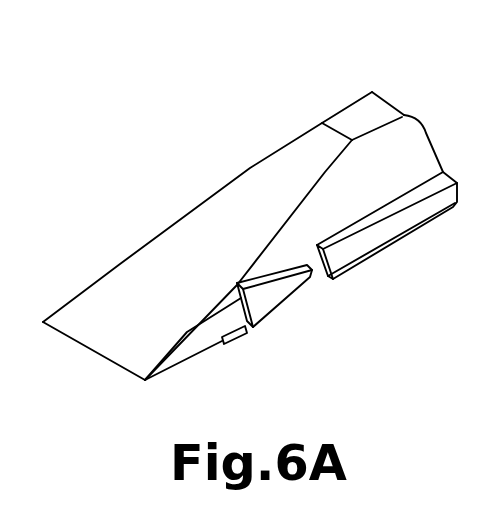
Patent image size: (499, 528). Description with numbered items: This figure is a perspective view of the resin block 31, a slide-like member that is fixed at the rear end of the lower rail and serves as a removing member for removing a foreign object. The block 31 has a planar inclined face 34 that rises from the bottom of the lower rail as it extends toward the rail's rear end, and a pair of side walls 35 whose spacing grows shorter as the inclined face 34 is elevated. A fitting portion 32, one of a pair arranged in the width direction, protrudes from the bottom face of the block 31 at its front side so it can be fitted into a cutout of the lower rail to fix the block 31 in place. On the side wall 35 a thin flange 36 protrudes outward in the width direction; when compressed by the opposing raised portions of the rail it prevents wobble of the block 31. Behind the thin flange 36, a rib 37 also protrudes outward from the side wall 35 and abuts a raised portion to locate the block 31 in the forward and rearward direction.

The block 31 is at (340, 88).
The fitting portion 32 is at (238, 344).
The inclined face 34 is at (241, 191).
The side wall 35 is at (411, 144).
The thin flange 36 is at (295, 284).
The rib 37 is at (383, 237).